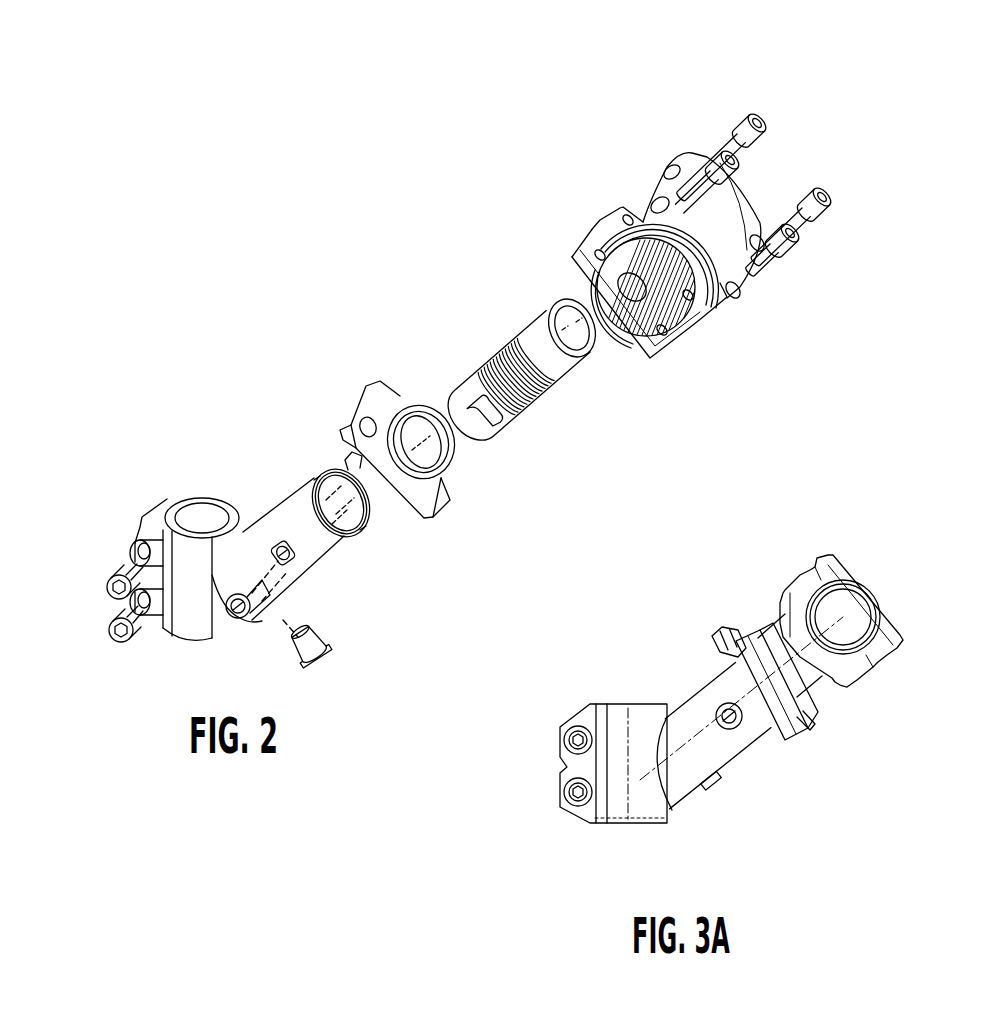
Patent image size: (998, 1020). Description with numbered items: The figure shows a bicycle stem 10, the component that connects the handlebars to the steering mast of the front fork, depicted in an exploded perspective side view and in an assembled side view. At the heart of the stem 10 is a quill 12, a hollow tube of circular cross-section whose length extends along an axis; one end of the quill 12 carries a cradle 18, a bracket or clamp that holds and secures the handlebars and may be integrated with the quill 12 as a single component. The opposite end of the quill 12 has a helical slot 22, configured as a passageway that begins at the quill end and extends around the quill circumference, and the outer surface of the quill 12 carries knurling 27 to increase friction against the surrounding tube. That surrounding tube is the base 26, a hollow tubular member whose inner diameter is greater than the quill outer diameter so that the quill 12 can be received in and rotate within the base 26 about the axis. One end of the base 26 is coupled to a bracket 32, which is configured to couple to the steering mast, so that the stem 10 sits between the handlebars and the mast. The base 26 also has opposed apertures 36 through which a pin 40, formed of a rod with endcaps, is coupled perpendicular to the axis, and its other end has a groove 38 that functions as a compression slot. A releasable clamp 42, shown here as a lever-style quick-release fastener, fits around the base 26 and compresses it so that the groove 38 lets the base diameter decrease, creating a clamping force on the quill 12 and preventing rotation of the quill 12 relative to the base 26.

In FIG. 2, the bicycle stem 10 is at (470, 368).
In FIG. 3A, the bicycle stem 10 is at (730, 720).
In FIG. 2, the quill 12 is at (514, 376).
In FIG. 3A, the quill 12 is at (812, 678).
In FIG. 2, the cradle 18 is at (703, 234).
In FIG. 3A, the cradle 18 is at (866, 621).
In FIG. 2, the helical slot 22 is at (473, 365).
In FIG. 2, the base 26 is at (272, 565).
In FIG. 3A, the base 26 is at (712, 706).
In FIG. 2, the knurling 27 is at (544, 414).
In FIG. 2, the bracket 32 is at (173, 599).
In FIG. 3A, the bracket 32 is at (622, 802).
In FIG. 2, the aperture 36 is at (290, 659).
In FIG. 2, the groove 38 is at (354, 487).
In FIG. 2, the pin 40 is at (249, 620).
In FIG. 3A, the pin 40 is at (709, 662).
In FIG. 2, the releasable clamp 42 is at (385, 430).
In FIG. 3A, the releasable clamp 42 is at (785, 709).